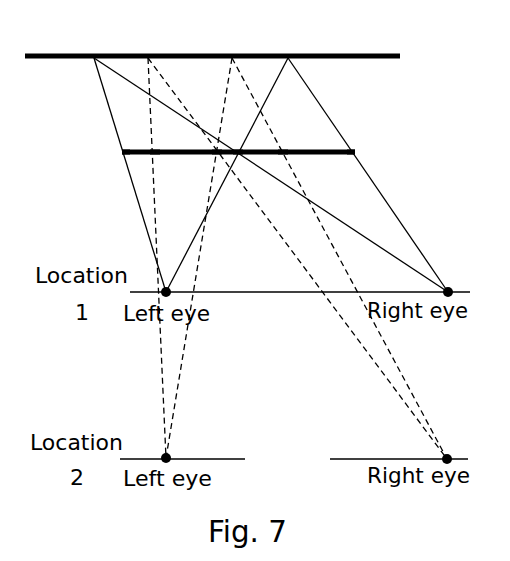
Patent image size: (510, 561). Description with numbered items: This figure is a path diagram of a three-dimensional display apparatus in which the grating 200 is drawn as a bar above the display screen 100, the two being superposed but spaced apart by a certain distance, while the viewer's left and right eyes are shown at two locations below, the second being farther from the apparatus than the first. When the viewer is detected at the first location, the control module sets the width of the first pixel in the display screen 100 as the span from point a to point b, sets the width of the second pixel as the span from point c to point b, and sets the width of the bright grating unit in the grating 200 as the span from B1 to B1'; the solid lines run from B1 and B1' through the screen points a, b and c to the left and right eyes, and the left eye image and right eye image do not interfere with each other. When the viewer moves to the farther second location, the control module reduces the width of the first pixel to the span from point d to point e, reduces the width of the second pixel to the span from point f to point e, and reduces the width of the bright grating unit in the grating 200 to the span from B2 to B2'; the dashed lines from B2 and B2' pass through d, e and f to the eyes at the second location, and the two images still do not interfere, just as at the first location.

The grating 200 is at (358, 55).
The display screen 100 is at (338, 135).
The first edge of bright grating unit at location 1 B1 is at (266, 163).
The second edge of bright grating unit at location 1 B1' is at (307, 163).
The first edge of bright grating unit at location 2 B2 is at (292, 246).
The second edge of bright grating unit at location 2 B2' is at (306, 246).
The first pixel edge point at location 1 a is at (128, 141).
The shared pixel boundary point at location 1 b is at (238, 141).
The second pixel edge point at location 1 c is at (352, 141).
The first pixel edge point at location 2 d is at (158, 141).
The shared pixel boundary point at location 2 e is at (215, 141).
The second pixel edge point at location 2 f is at (283, 141).